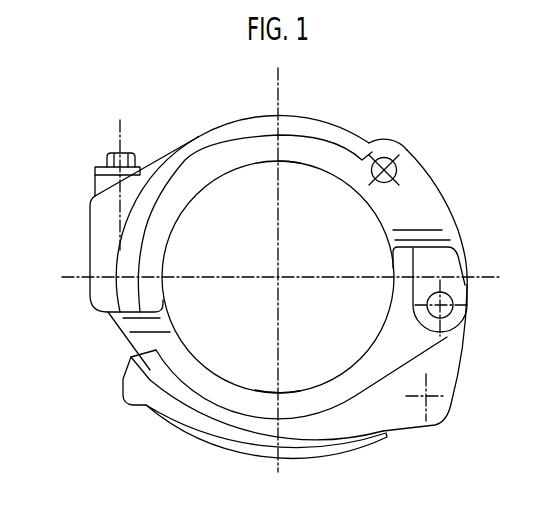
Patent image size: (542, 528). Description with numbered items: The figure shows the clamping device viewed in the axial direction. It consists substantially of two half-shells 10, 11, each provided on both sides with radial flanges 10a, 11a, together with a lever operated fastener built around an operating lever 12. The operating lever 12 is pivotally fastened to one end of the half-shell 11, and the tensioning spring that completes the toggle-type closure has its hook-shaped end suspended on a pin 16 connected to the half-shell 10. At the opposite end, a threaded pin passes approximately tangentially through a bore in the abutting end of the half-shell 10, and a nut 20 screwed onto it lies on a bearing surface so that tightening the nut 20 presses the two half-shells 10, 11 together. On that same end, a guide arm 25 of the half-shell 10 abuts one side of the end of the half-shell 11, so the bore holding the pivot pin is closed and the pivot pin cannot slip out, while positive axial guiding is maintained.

The half-shell 10 is at (243, 128).
The radial flange 10a is at (285, 160).
The half-shell 11 is at (143, 337).
The radial flange 11a is at (282, 404).
The operating lever 12 is at (178, 412).
The pin 16 is at (394, 162).
The nut 20 is at (97, 182).
The guide arm 25 is at (130, 292).